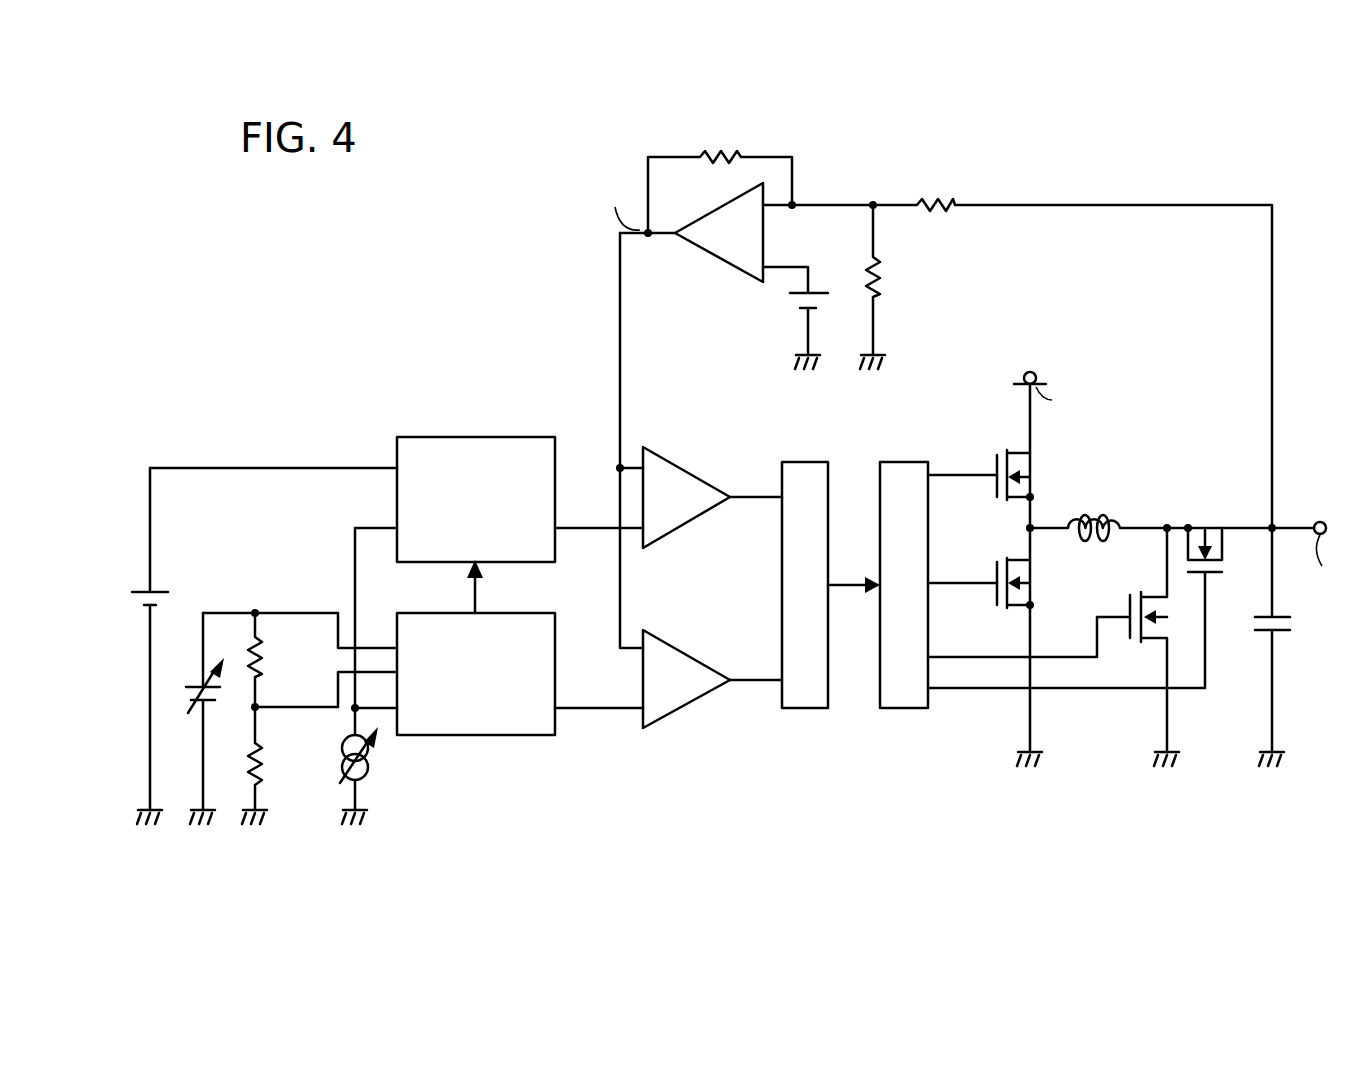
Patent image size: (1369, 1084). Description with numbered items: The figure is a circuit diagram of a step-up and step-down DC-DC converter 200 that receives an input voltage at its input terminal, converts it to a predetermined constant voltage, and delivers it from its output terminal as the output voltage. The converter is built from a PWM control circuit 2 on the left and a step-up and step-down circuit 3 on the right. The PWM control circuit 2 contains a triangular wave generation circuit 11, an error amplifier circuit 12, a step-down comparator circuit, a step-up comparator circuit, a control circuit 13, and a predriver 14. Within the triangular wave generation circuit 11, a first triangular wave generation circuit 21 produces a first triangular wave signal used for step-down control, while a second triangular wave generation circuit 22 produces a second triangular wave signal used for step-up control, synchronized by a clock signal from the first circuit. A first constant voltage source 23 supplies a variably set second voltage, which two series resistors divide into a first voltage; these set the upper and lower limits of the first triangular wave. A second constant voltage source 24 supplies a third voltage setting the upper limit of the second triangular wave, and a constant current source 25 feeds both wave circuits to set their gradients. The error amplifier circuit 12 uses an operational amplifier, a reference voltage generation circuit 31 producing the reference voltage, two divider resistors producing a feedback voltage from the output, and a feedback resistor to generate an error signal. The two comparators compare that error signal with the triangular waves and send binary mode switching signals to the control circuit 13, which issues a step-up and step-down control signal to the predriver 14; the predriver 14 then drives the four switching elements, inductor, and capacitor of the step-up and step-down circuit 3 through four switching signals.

The step-up and step-down DC-DC converter 200 is at (1086, 162).
The PWM control circuit 2 is at (115, 845).
The step-up and step-down circuit 3 is at (1297, 845).
The triangular wave generation circuit 11 is at (353, 398).
The error amplifier circuit 12 is at (803, 165).
The control circuit 13 is at (805, 712).
The predriver 14 is at (905, 712).
The first triangular wave generation circuit 21 is at (475, 738).
The second triangular wave generation circuit 22 is at (476, 432).
The first constant voltage source 23 is at (182, 703).
The second constant voltage source 24 is at (128, 607).
The constant current source 25 is at (368, 766).
The reference voltage generation circuit 31 is at (787, 304).